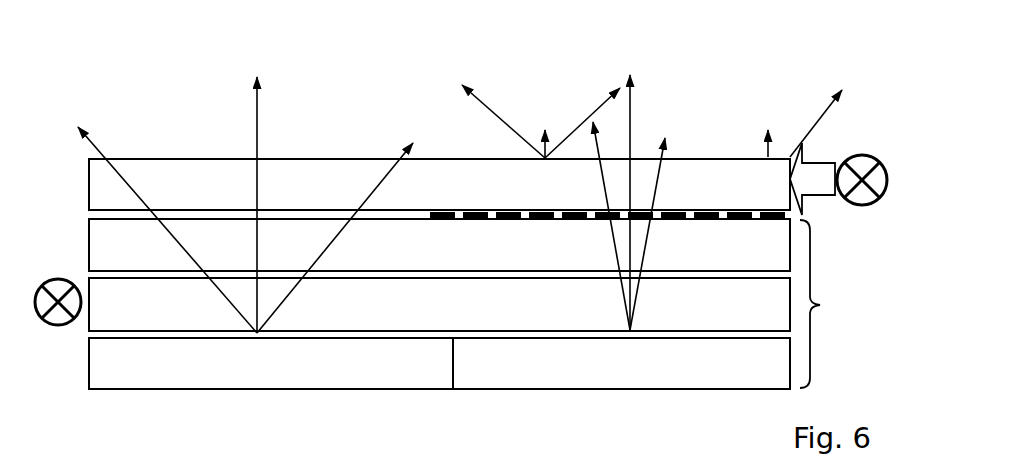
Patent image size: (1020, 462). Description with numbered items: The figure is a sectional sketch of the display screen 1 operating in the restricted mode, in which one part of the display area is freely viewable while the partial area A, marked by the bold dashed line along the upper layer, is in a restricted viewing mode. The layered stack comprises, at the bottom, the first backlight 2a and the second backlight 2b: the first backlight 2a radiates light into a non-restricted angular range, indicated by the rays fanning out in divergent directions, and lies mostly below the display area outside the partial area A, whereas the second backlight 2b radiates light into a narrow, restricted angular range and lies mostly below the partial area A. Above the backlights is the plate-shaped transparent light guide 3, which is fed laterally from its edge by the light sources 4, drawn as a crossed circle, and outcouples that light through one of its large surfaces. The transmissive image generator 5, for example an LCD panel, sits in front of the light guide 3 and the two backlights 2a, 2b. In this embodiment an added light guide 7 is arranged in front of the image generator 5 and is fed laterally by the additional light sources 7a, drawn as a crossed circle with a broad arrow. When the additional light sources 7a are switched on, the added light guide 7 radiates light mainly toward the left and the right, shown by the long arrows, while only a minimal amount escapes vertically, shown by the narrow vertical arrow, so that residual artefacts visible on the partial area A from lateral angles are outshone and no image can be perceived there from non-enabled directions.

The display screen 1 is at (827, 304).
The first backlight 2a is at (271, 363).
The second backlight 2b is at (621, 363).
The light guide 3 is at (439, 304).
The transmissive image generator 5 is at (439, 245).
The added light guide 7 is at (439, 184).
The additional light sources 7a is at (863, 154).
The light sources 4 is at (57, 278).
The partial area A is at (472, 214).